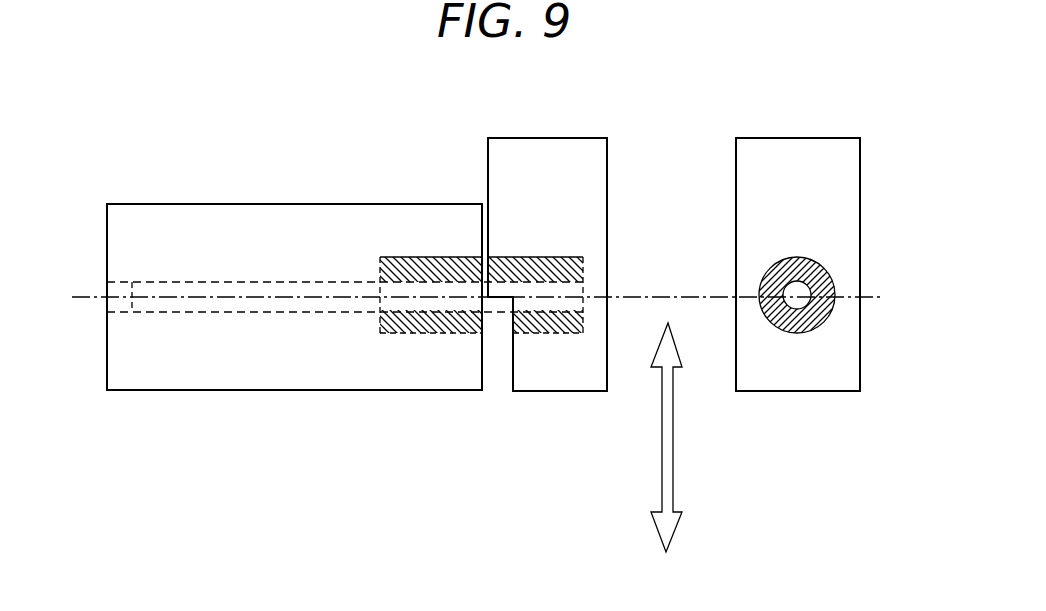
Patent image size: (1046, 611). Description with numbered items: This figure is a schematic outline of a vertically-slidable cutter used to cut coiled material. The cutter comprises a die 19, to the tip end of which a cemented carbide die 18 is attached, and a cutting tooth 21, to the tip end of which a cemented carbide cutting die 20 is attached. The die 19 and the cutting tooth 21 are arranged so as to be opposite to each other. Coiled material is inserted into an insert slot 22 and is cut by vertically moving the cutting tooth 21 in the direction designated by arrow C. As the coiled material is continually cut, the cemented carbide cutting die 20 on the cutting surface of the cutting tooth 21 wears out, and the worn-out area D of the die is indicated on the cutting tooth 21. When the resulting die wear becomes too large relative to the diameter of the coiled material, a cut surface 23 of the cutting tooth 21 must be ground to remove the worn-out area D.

The cemented carbide die 18 is at (422, 334).
The die 19 is at (226, 204).
The cemented carbide cutting die 20 is at (563, 257).
The cutting tooth 21 is at (539, 138).
The insert slot 22 is at (132, 296).
The cut surface 23 is at (488, 175).
The worn-out area D is at (812, 281).
The arrow indicating cutting direction C is at (677, 437).